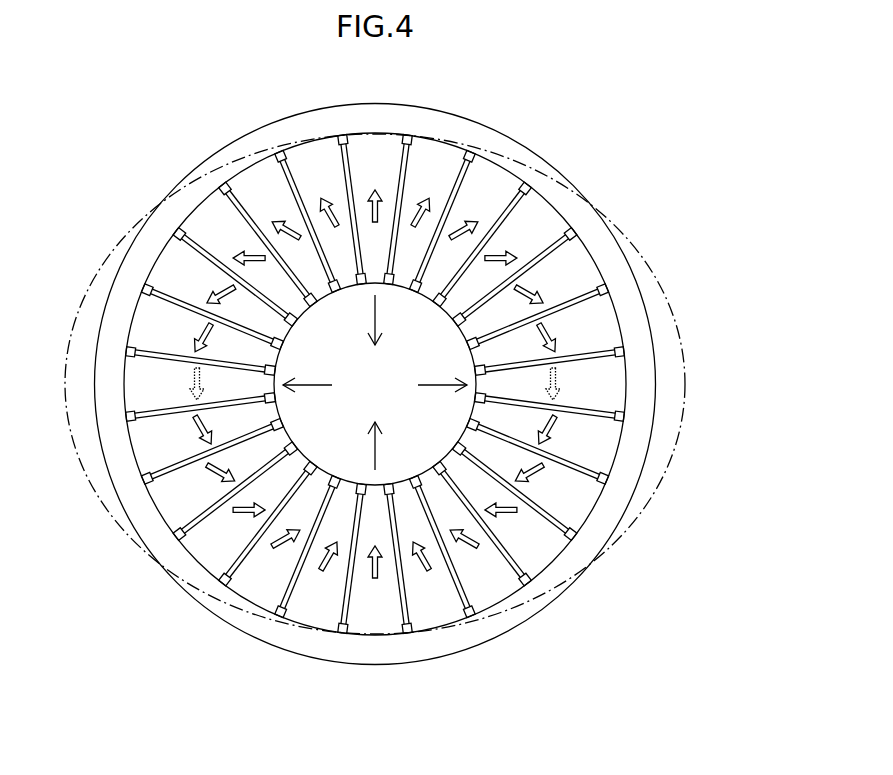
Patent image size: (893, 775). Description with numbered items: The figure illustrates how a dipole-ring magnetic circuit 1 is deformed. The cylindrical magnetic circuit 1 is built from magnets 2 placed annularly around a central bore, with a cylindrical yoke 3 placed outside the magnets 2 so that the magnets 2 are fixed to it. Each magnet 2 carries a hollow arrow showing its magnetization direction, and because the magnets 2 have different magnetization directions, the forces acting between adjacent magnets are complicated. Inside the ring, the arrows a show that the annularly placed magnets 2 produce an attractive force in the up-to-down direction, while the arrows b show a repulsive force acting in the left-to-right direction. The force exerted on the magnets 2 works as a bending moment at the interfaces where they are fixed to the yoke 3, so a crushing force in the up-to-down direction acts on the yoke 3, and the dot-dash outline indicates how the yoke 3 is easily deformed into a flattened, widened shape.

The dipole-ring magnetic circuit 1 is at (538, 130).
The magnets 2 is at (566, 272).
The cylindrical yoke 3 is at (632, 327).
The arrows a is at (378, 313).
The arrows b is at (320, 380).